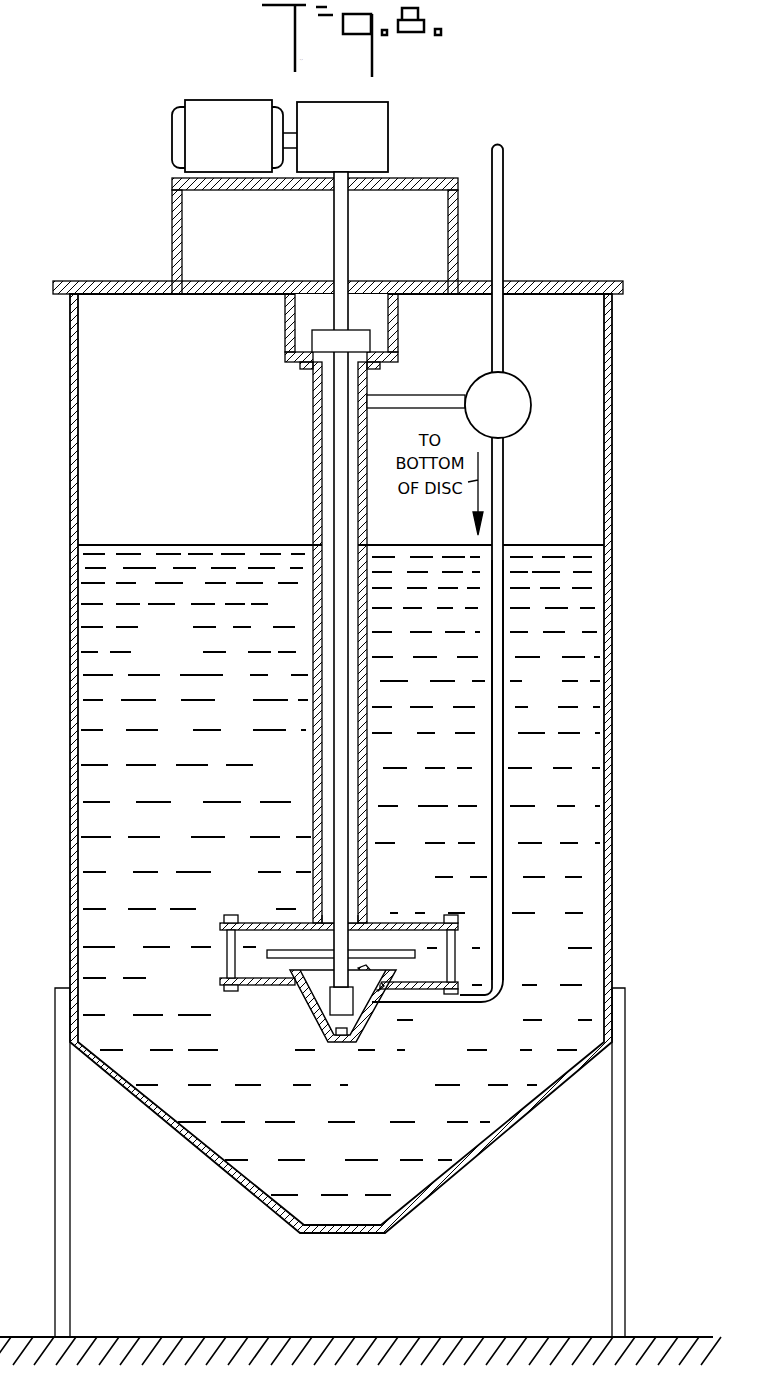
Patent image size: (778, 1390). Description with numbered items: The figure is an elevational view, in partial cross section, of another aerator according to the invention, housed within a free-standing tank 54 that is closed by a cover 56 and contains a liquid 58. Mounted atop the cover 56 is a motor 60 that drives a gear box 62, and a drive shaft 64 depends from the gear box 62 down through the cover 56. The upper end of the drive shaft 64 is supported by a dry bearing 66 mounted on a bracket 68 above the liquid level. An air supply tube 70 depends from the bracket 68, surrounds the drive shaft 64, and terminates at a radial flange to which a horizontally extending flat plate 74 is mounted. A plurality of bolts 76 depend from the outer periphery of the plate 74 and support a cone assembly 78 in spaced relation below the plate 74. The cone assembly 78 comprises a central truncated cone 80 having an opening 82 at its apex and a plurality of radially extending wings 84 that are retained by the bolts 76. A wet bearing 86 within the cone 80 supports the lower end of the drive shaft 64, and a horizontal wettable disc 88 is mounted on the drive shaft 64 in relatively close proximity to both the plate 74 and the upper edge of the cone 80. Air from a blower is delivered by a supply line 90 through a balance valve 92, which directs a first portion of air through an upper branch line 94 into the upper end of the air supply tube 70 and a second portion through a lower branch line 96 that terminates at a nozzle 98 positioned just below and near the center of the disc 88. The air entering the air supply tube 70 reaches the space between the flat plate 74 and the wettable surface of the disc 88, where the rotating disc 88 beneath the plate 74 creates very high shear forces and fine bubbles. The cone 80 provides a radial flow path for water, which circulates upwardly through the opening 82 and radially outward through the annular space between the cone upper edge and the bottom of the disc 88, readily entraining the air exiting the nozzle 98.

The tank 54 is at (607, 760).
The cover 56 is at (131, 280).
The liquid 58 is at (185, 652).
The motor 60 is at (193, 103).
The gear box 62 is at (390, 110).
The drive shaft 64 is at (337, 240).
The dry bearing 66 is at (312, 340).
The bracket 68 is at (285, 322).
The air supply tube 70 is at (317, 588).
The flat plate 74 is at (357, 983).
The bolts 76 is at (230, 958).
The cone assembly 78 is at (323, 1034).
The truncated cone 80 is at (307, 993).
The opening 82 is at (340, 1045).
The wings 84 is at (425, 986).
The wet bearing 86 is at (358, 1005).
The wettable disc 88 is at (402, 952).
The supply line 90 is at (503, 176).
The balance valve 92 is at (527, 393).
The upper branch line 94 is at (427, 402).
The lower branch line 96 is at (492, 688).
The nozzle 98 is at (360, 973).